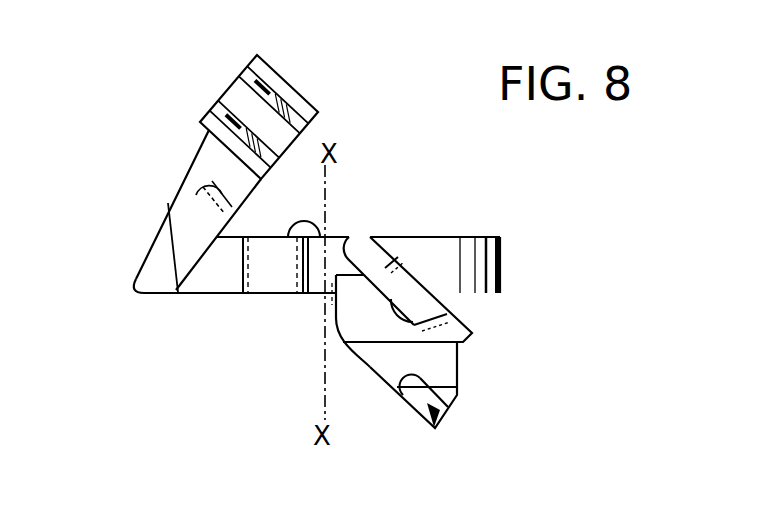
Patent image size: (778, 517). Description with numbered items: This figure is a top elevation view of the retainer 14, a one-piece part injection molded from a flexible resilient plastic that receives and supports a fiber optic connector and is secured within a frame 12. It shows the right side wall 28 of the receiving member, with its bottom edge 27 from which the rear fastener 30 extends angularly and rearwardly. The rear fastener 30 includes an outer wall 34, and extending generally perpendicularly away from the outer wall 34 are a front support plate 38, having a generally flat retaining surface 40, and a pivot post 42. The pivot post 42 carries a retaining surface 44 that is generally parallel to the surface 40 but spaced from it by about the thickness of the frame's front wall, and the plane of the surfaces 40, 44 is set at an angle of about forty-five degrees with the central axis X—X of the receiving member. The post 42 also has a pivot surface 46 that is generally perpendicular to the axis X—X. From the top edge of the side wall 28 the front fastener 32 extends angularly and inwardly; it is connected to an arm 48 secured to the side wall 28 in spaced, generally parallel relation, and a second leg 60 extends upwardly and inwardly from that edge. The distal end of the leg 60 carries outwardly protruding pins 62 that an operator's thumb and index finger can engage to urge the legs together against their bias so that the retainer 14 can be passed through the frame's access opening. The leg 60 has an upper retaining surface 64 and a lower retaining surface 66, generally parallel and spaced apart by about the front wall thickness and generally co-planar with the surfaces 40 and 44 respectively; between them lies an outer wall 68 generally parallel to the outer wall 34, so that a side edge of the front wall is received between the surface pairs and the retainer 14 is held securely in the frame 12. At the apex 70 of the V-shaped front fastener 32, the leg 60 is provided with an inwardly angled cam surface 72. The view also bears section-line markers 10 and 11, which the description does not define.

The section line 10-10 / cutting tool 10 is at (188, 147).
The section line 11- 11 is at (277, 48).
The frame 12 is at (305, 372).
The retainer 14 is at (342, 62).
The bottom edge 27 is at (203, 295).
The right side wall 28 is at (432, 250).
The rear fastener 30 is at (478, 335).
The front fastener 32 is at (324, 111).
The outer wall 34 is at (374, 327).
The front support plate 38 is at (365, 255).
The retaining surface 40 is at (432, 306).
The pivot post 42 is at (436, 429).
The retaining surface 44 is at (458, 394).
The pivot surface 46 is at (397, 388).
The arm 48 is at (224, 278).
The second leg 60 is at (190, 242).
The pins 62 is at (246, 65).
The upper retaining surface 64 is at (241, 155).
The lower retaining surface 66 is at (168, 201).
The outer wall 68 is at (188, 175).
The apex 70 is at (131, 292).
The cam surface 72 is at (153, 280).